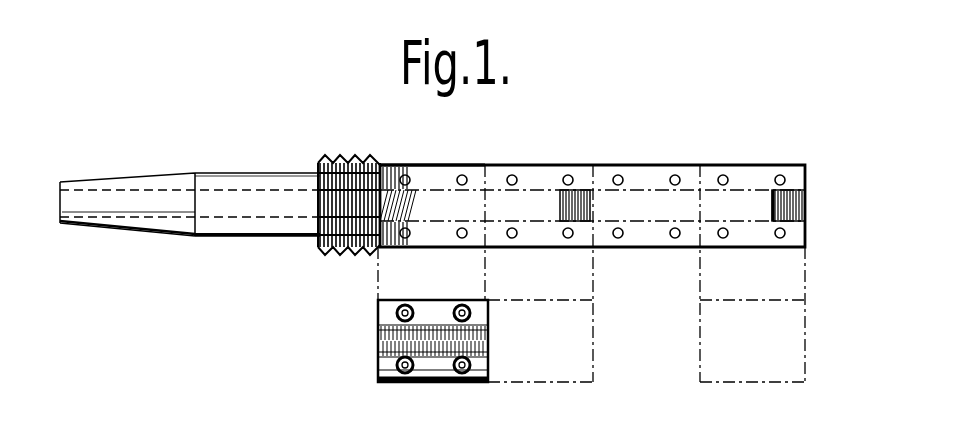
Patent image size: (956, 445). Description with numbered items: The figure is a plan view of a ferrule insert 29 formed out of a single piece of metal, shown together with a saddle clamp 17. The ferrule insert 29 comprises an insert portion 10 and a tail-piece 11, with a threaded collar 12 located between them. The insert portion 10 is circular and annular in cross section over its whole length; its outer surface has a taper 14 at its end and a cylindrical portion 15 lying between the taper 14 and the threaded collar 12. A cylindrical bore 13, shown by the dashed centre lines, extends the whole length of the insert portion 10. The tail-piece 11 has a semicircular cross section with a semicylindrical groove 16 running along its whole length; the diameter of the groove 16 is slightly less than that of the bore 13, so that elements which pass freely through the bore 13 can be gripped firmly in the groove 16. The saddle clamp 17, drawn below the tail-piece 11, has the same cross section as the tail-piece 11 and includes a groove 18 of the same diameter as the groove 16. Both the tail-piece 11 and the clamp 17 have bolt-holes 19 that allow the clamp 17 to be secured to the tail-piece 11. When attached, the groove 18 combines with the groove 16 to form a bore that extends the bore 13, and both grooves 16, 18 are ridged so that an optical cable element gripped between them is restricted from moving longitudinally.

The insert portion 10 is at (220, 134).
The tail-piece 11 is at (678, 165).
The threaded collar 12 is at (350, 162).
The cylindrical bore 13 is at (238, 193).
The taper 14 is at (140, 238).
The cylindrical portion 15 is at (267, 238).
The semicylindrical groove 16 is at (806, 200).
The saddle clamp 17 is at (441, 386).
The groove 18 is at (378, 340).
The bolt-holes 19 is at (462, 305).
The ferrule insert 29 is at (481, 160).